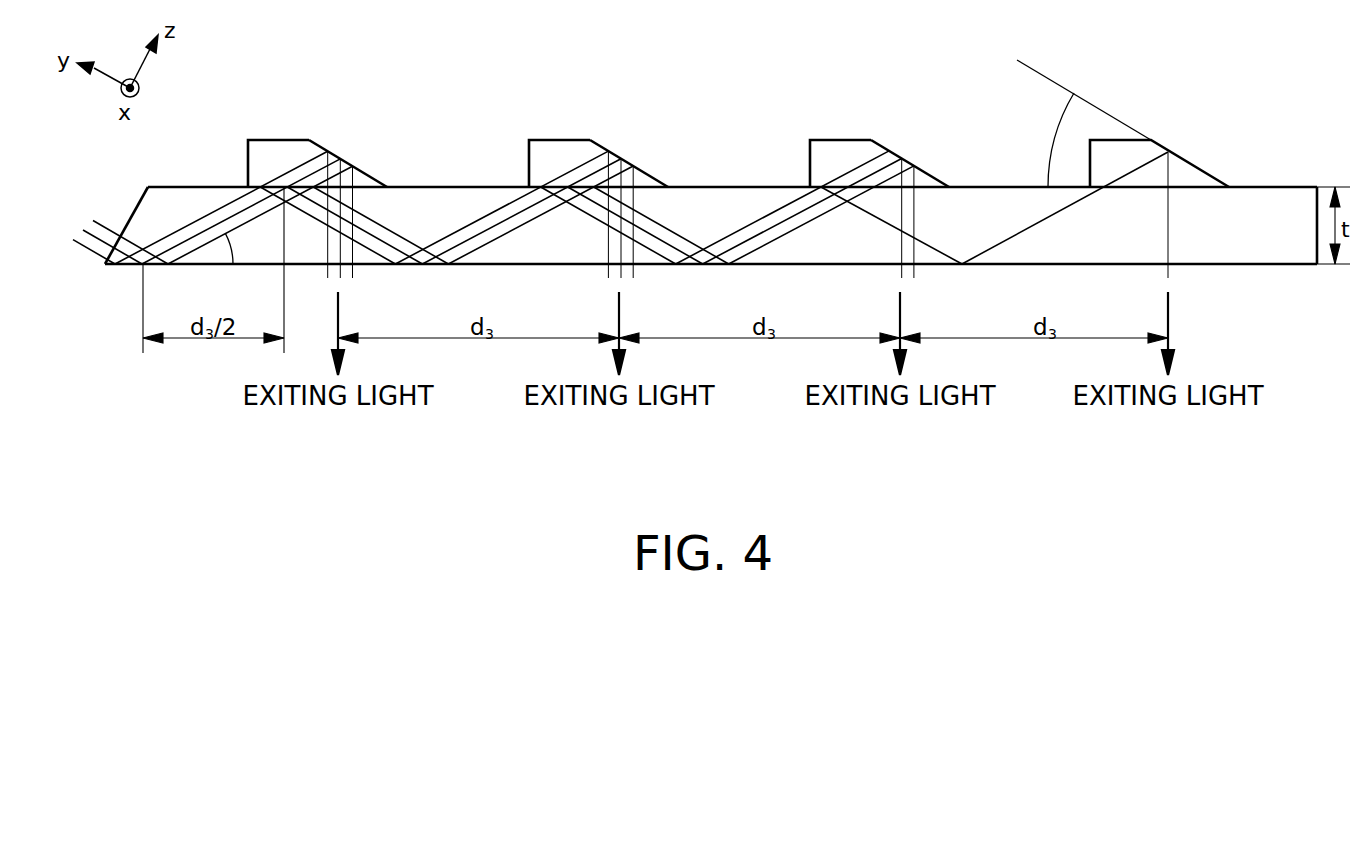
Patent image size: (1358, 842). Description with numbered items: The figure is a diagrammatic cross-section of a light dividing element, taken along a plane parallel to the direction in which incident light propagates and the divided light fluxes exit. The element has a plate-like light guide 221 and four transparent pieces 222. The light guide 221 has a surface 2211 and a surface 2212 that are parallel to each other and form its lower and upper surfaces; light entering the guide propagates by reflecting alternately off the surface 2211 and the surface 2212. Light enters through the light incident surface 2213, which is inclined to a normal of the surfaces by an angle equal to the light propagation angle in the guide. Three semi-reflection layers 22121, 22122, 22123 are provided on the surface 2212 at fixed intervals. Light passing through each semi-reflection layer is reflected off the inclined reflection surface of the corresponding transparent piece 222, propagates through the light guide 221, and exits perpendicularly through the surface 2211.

The light guide 221 is at (977, 210).
The surface 2211 is at (815, 266).
The surface 2212 is at (712, 186).
The light incident surface 2213 is at (132, 214).
The transparent piece 222 is at (270, 148).
The semi-reflection layer 22121 is at (300, 170).
The semi-reflection layer 22122 is at (581, 170).
The semi-reflection layer 22123 is at (863, 170).